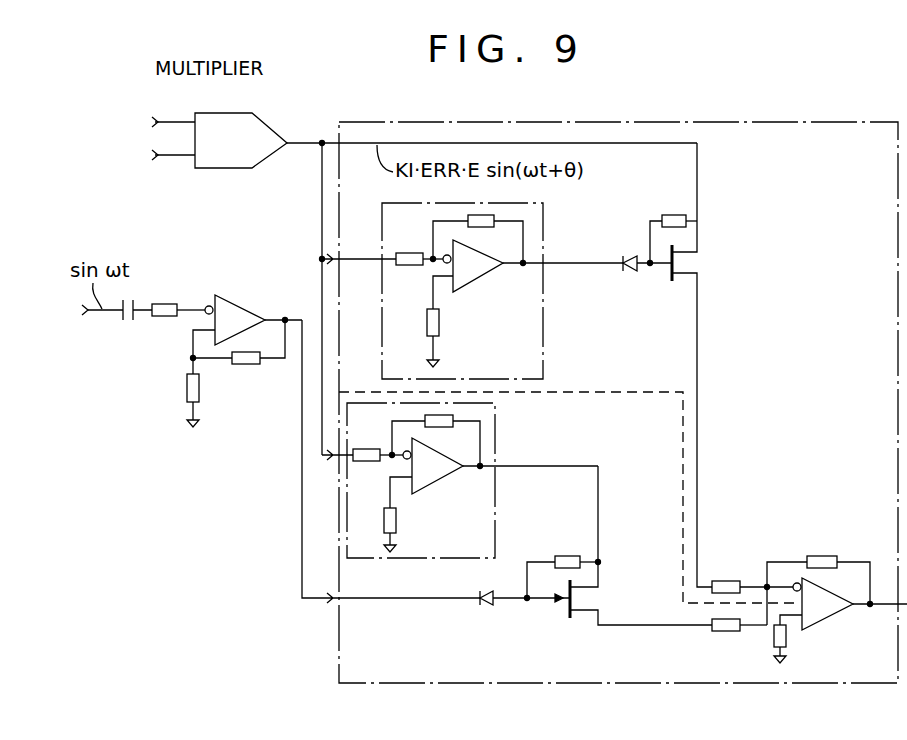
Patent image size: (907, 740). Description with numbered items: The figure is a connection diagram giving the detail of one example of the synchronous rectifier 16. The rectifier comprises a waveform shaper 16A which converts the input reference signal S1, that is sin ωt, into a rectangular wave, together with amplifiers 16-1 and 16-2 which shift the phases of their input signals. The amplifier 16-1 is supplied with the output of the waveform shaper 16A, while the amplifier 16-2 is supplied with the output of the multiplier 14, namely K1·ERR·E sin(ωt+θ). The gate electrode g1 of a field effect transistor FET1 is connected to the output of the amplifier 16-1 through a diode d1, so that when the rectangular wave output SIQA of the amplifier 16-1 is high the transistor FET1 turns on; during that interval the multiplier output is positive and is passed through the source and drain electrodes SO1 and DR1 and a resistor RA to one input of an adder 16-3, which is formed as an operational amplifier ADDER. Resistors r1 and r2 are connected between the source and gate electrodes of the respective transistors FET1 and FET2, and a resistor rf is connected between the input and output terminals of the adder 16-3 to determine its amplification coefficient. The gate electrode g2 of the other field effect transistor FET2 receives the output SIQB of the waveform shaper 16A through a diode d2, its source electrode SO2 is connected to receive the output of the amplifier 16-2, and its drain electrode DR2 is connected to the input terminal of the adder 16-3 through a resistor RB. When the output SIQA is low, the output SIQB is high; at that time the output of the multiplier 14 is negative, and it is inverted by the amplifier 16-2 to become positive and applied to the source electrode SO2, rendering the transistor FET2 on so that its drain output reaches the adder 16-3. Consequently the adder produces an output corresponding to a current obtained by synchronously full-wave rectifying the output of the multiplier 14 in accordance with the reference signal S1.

The multiplier 14 is at (218, 113).
The synchronous rectifier 16 is at (407, 122).
The waveform shaper 16A is at (235, 297).
The amplifier 16-1 is at (543, 348).
The amplifier 16-2 is at (495, 418).
The adder 16-3 is at (807, 593).
The reference signal S1 is at (98, 308).
The rectangular wave output SIQA is at (563, 266).
The output of the waveform shaper SIQB is at (385, 600).
The diode d1 is at (627, 257).
The diode d2 is at (483, 606).
The gate electrode g1 is at (658, 268).
The gate electrode g2 is at (541, 603).
The resistor r1 is at (670, 215).
The resistor r2 is at (566, 557).
The source electrode SO1 is at (698, 233).
The source electrode SO2 is at (598, 582).
The field effect transistor FET1 is at (700, 263).
The field effect transistor FET2 is at (583, 597).
The drain electrode DR1 is at (698, 283).
The drain electrode DR2 is at (597, 617).
The resistor RA is at (724, 581).
The resistor RB is at (724, 631).
The resistor rf is at (825, 556).
The adder ADDER is at (823, 623).